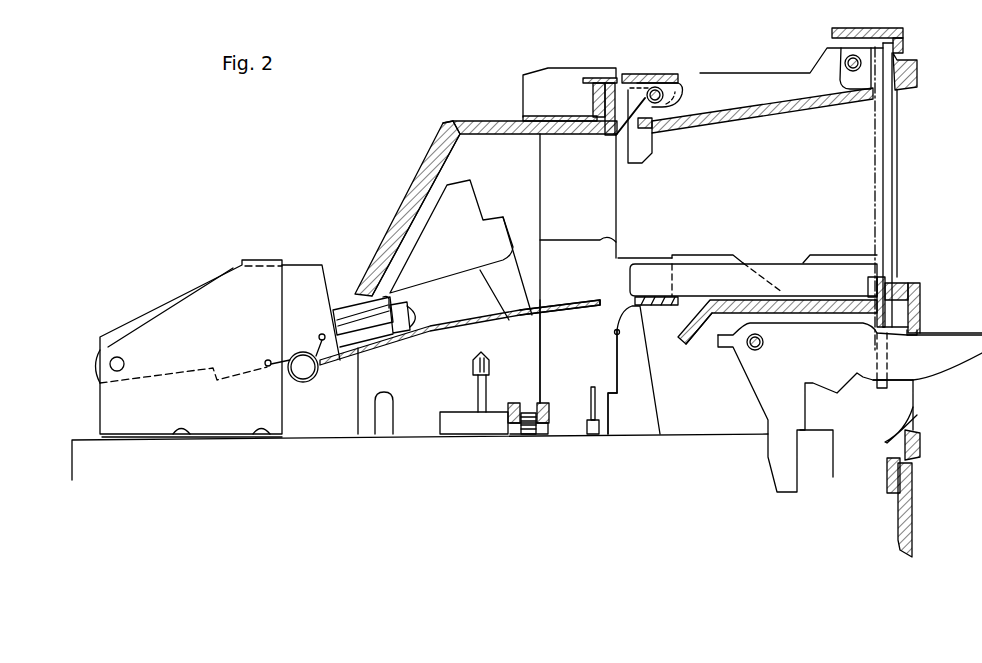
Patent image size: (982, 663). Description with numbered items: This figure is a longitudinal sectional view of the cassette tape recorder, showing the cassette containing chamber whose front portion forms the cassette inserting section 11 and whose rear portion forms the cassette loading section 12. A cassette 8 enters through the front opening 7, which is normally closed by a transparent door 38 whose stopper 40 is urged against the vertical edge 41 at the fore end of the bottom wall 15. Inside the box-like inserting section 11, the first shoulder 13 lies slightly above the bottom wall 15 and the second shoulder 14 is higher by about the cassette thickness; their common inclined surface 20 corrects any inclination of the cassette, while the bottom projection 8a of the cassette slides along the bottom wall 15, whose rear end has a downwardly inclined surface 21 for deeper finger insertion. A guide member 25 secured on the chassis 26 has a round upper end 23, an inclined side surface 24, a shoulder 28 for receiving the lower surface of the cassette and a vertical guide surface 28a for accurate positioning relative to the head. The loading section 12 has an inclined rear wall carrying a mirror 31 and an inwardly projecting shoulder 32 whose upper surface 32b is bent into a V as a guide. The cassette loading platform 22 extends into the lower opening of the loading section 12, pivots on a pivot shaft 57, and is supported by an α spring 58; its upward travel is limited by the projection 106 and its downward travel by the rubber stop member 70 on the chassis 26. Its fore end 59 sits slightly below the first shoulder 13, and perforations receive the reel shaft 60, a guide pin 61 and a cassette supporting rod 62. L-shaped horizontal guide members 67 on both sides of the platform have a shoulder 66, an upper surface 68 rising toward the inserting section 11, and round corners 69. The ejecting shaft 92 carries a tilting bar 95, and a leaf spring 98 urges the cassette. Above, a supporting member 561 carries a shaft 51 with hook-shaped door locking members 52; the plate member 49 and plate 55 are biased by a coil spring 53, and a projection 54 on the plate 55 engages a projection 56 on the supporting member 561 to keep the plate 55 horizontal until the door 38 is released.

The projection 106 is at (189, 325).
The pivot shaft 57 is at (111, 332).
The α spring 58 is at (302, 385).
The cassette loading platform 22 is at (460, 337).
The round corners 69 is at (560, 291).
The ejecting shaft 92 is at (353, 287).
The leaf spring 98 is at (363, 276).
The bar 95 is at (403, 344).
The mirror 31 is at (407, 208).
The shoulder 66 is at (424, 115).
The horizontal guide member 67 is at (411, 215).
The cassette loading section 12 is at (535, 240).
The shoulder 32 is at (468, 247).
The upper surface 68 is at (505, 315).
The upper surface 32b is at (607, 233).
The fore end 59 is at (557, 351).
The supporting member 561 is at (548, 83).
The projection 54 is at (591, 53).
The projection 56 is at (569, 70).
The plate 55 is at (618, 79).
The plate member 49 is at (650, 53).
The shaft 51 is at (670, 63).
The coil spring 53 is at (670, 79).
The stopper 40 is at (810, 211).
The door locking member 52 is at (665, 136).
The door 38 is at (798, 185).
The cassette inserting section 11 is at (822, 79).
The opening 7 is at (899, 200).
The vertical edge 41 is at (905, 267).
The second shoulder 14 is at (747, 259).
The inclined surface 20 is at (727, 257).
The bottom wall 15 is at (777, 283).
The cassette 8 is at (860, 305).
The bottom projection 8a is at (881, 386).
The first shoulder 13 is at (656, 327).
The downwardly inclined surface 21 is at (699, 346).
The guide member 25 is at (658, 370).
The shoulder 28 is at (597, 393).
The vertical guide surface 28a is at (637, 361).
The round upper end 23 is at (604, 297).
The inclined side surface 24 is at (597, 330).
The reel shaft 60 is at (465, 393).
The stop member 70 is at (521, 442).
The guide pin 61 is at (573, 434).
The cassette supporting rod 62 is at (405, 437).
The chassis 26 is at (849, 440).